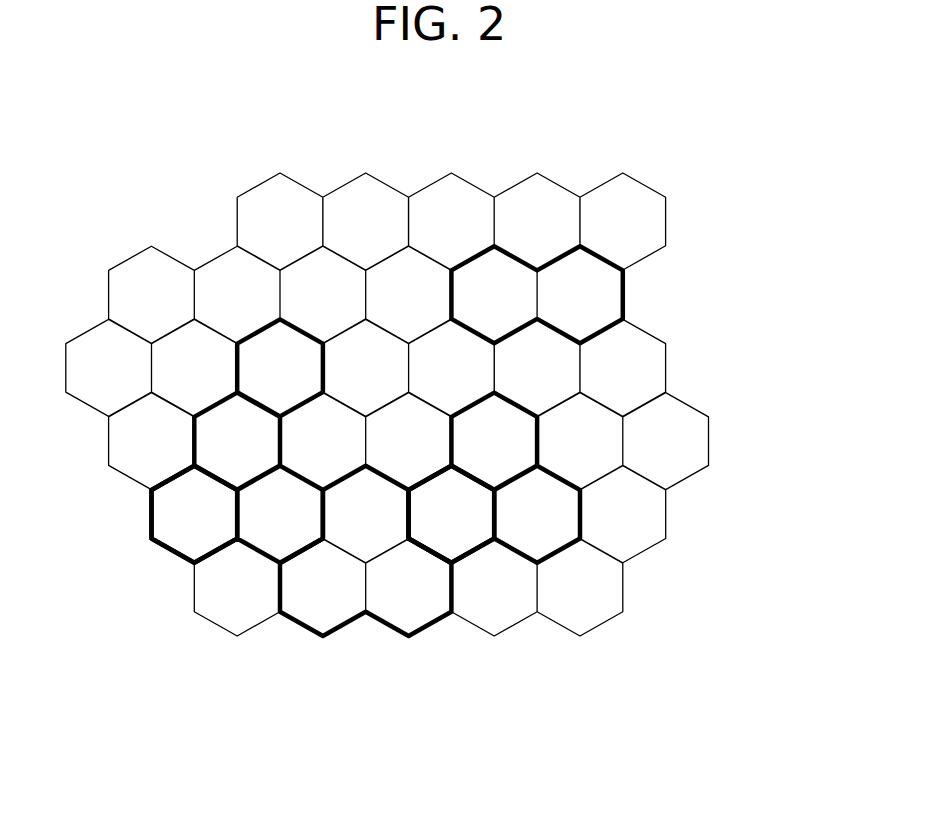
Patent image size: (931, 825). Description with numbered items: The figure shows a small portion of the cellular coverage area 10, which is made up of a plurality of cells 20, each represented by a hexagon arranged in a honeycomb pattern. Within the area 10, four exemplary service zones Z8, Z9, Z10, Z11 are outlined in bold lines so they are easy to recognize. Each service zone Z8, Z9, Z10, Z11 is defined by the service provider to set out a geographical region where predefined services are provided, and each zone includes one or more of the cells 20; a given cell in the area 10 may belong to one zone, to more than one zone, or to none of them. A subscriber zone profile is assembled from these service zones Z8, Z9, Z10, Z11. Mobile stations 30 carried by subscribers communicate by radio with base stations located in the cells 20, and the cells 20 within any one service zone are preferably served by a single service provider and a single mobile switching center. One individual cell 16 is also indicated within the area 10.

The cellular coverage area 10 is at (420, 398).
The cell 16 is at (457, 537).
The cells 20 is at (162, 288).
The mobile stations 30 is at (182, 536).
The service zone Z8 is at (237, 375).
The service zone Z9 is at (624, 285).
The service zone Z10 is at (584, 517).
The service zone Z11 is at (307, 628).